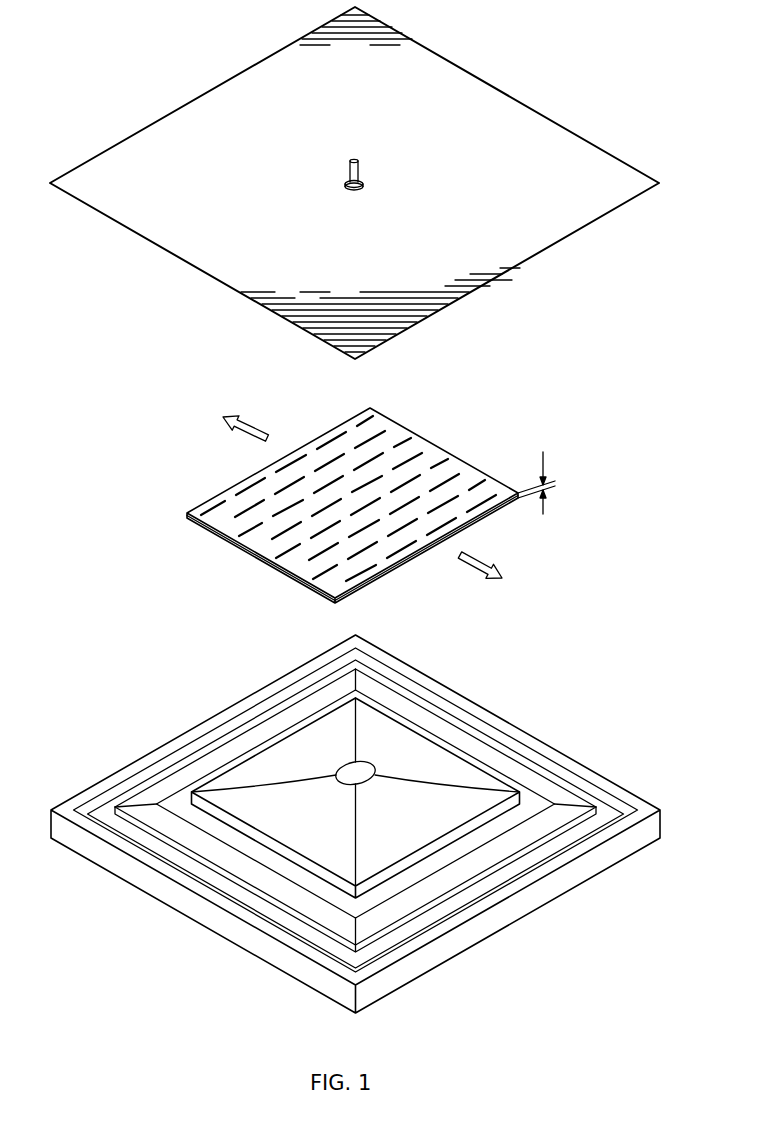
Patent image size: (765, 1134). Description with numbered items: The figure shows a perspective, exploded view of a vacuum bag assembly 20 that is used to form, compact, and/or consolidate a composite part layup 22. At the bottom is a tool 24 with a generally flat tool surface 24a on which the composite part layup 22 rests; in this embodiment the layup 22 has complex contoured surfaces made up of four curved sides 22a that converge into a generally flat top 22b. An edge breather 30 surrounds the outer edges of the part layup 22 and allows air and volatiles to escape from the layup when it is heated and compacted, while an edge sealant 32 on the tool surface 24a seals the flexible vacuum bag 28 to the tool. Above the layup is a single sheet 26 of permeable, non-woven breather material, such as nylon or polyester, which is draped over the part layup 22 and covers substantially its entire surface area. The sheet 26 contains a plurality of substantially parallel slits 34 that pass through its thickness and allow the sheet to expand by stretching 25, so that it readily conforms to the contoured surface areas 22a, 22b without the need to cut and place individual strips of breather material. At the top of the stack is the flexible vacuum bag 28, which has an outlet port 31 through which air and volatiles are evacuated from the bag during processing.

The vacuum bag assembly 20 is at (683, 0).
The composite part layup 22 is at (445, 842).
The curved sides 22a is at (426, 750).
The flat top 22b is at (350, 780).
The tool 24 is at (196, 917).
The tool surface 24a is at (64, 808).
The stretching 25 is at (244, 430).
The sheet of breather material 26 is at (466, 475).
The vacuum bag 28 is at (207, 100).
The edge breather 30 is at (184, 778).
The outlet port 31 is at (361, 169).
The edge sealant 32 is at (265, 706).
The slits 34 is at (278, 493).